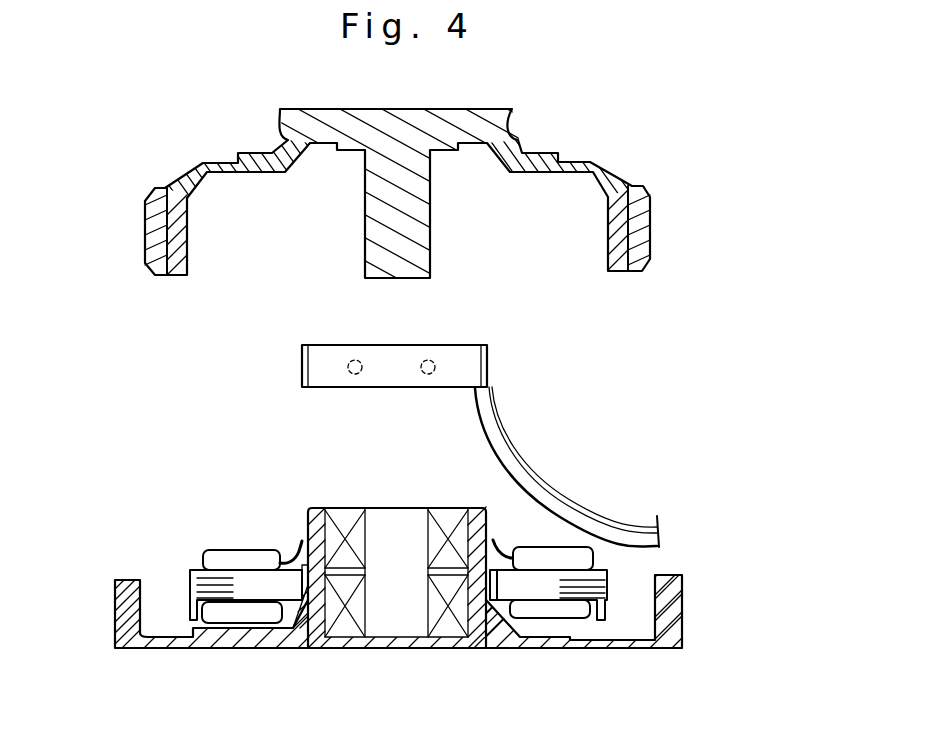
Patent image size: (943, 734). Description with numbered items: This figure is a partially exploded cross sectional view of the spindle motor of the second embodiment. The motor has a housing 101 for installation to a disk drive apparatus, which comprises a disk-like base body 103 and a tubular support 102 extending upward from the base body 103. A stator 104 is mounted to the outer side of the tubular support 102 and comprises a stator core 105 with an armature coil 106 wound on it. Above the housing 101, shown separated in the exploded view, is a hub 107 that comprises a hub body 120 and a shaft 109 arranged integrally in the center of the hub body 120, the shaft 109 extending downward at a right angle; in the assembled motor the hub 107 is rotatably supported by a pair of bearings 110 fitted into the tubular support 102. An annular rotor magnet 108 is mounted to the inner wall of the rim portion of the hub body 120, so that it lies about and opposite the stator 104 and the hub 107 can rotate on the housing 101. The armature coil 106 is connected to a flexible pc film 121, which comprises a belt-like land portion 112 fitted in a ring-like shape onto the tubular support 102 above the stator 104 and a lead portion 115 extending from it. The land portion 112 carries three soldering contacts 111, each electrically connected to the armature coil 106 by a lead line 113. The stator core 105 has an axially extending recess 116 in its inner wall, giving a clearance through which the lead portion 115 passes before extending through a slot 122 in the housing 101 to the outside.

The housing 101 is at (275, 655).
The tubular support 102 is at (312, 508).
The base body 103 is at (178, 650).
The stator 104 is at (213, 541).
The stator core 105 is at (190, 578).
The armature coil 106 is at (243, 558).
The hub 107 is at (580, 153).
The rotor magnet 108 is at (618, 265).
The shaft 109 is at (417, 227).
The bearings 110 is at (348, 520).
The soldering contacts 111 is at (362, 360).
The land portion 112 is at (298, 370).
The lead line 113 is at (300, 540).
The lead portion 115 is at (643, 522).
The recess 116 is at (528, 637).
The hub body 120 is at (258, 163).
The flexible pc film 121 is at (505, 430).
The slot 122 is at (682, 636).